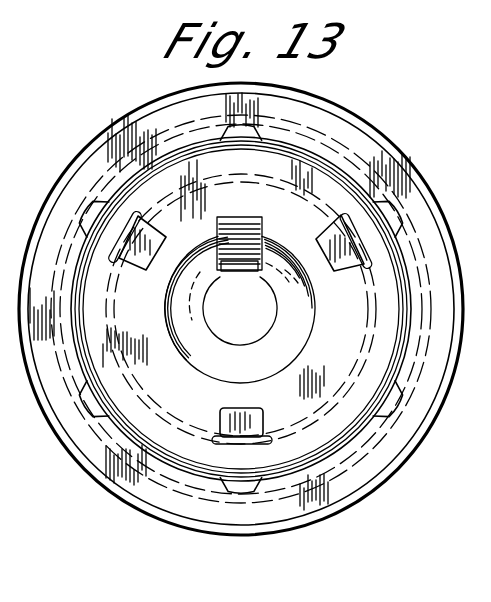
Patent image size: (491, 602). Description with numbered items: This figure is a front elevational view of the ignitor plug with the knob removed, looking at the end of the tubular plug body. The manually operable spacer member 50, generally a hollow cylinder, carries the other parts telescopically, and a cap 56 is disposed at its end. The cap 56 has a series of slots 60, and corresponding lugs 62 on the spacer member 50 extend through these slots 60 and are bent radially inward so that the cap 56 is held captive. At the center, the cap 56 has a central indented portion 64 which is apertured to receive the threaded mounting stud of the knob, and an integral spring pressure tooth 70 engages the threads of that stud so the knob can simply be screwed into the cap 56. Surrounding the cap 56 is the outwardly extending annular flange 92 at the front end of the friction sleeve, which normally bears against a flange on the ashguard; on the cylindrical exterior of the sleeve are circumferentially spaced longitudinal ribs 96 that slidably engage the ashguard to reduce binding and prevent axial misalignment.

The spacer member 50 is at (162, 410).
The cap 56 is at (187, 447).
The slots 60 is at (140, 213).
The lugs 62 is at (147, 271).
The central indented portion 64 is at (283, 336).
The spring pressure tooth 70 is at (245, 266).
The annular flange 92 is at (350, 478).
The longitudinal ribs 96 is at (257, 127).